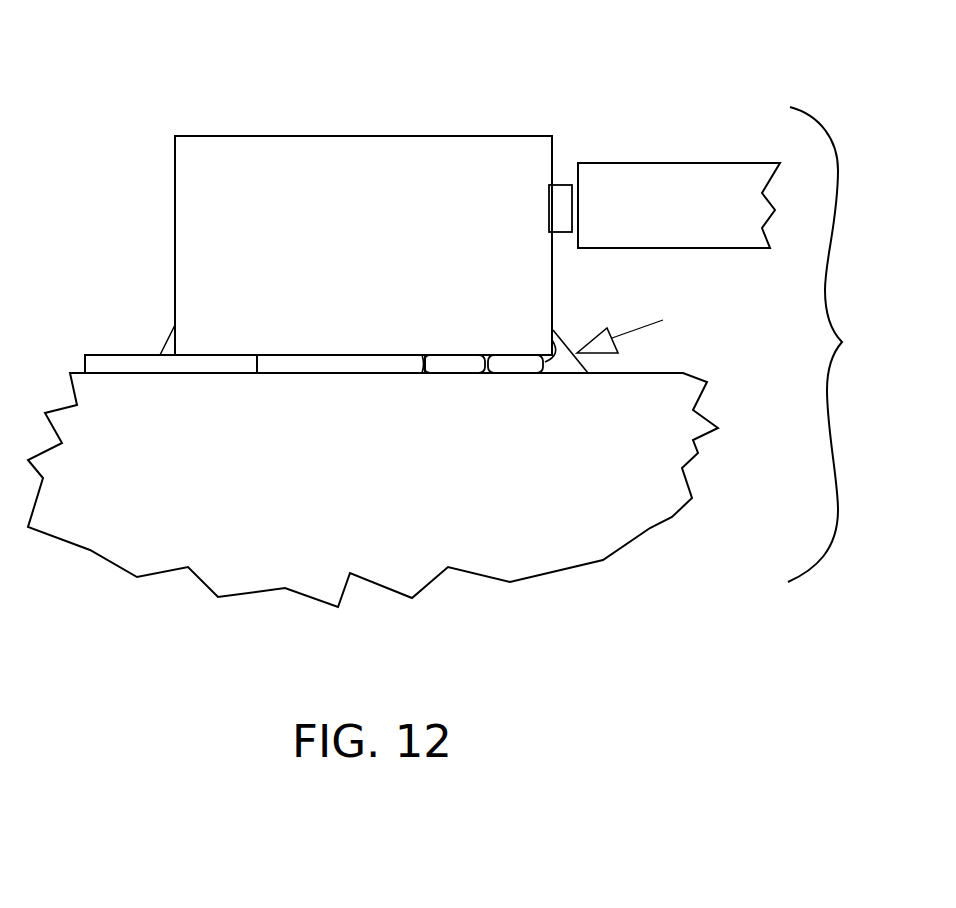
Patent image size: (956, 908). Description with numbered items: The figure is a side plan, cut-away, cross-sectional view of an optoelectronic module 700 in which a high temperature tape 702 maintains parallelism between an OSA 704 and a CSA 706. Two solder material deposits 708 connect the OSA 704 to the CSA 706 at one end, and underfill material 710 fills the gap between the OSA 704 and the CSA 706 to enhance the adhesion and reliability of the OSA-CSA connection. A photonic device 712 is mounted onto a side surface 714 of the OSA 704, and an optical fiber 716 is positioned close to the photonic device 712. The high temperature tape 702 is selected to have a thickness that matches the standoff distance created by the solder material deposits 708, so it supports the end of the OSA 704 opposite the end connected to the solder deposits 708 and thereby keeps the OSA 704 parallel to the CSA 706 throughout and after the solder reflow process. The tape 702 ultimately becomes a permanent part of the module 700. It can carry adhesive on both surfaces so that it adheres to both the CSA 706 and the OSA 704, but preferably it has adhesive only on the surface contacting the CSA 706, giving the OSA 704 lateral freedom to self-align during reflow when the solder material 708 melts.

The optoelectronic module 700 is at (847, 344).
The high temperature tape 702 is at (118, 355).
The OSA 704 is at (365, 136).
The CSA 706 is at (672, 517).
The solder material deposits 708 is at (502, 353).
The underfill material 710 is at (648, 324).
The photonic device 712 is at (562, 185).
The side surface 714 is at (553, 145).
The optical fiber 716 is at (700, 163).